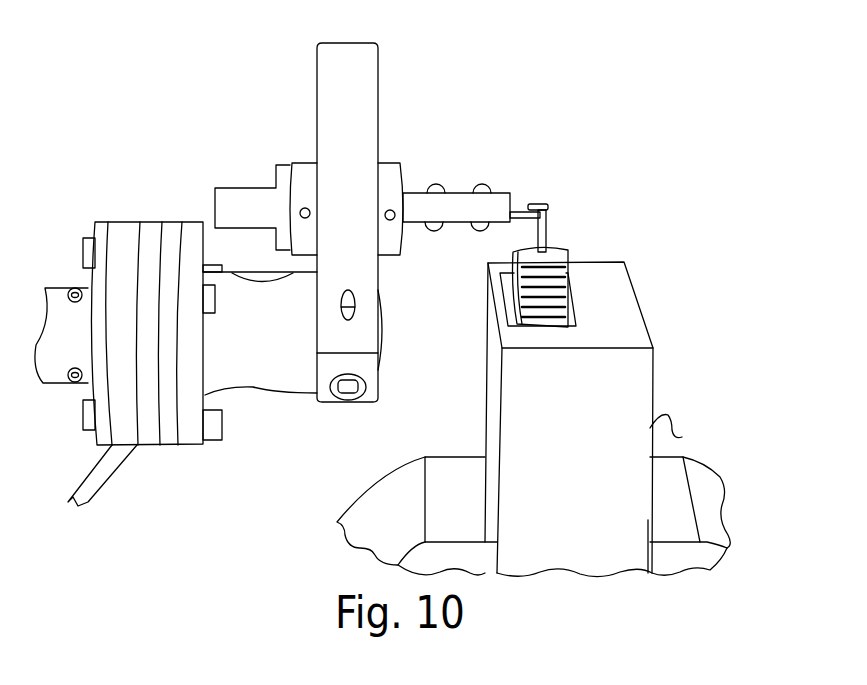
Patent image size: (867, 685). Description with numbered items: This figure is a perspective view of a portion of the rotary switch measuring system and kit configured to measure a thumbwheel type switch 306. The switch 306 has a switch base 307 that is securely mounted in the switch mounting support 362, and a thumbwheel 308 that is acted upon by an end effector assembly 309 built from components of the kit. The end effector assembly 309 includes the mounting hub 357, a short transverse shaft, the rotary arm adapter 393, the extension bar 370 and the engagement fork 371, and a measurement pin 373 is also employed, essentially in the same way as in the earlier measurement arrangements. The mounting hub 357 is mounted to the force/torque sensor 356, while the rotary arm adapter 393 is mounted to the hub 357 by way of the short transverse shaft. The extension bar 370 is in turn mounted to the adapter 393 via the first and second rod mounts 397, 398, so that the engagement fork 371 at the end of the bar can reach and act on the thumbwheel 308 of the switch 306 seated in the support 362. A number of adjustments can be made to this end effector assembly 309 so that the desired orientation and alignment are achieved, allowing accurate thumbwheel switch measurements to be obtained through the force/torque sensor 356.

The thumbwheel type switch 306 is at (700, 328).
The switch base 307 is at (680, 437).
The thumbwheel 308 is at (565, 256).
The end effector assembly 309 is at (324, 203).
The force/torque sensor 356 is at (155, 447).
The mounting hub 357 is at (260, 392).
The switch mounting support 362 is at (337, 522).
The extension bar 370 is at (215, 192).
The engagement fork 371 is at (525, 225).
The measurement pin 373 is at (548, 205).
The rotary arm adapter 393 is at (317, 70).
The first rod mount 397 is at (300, 163).
The second rod mount 398 is at (390, 163).